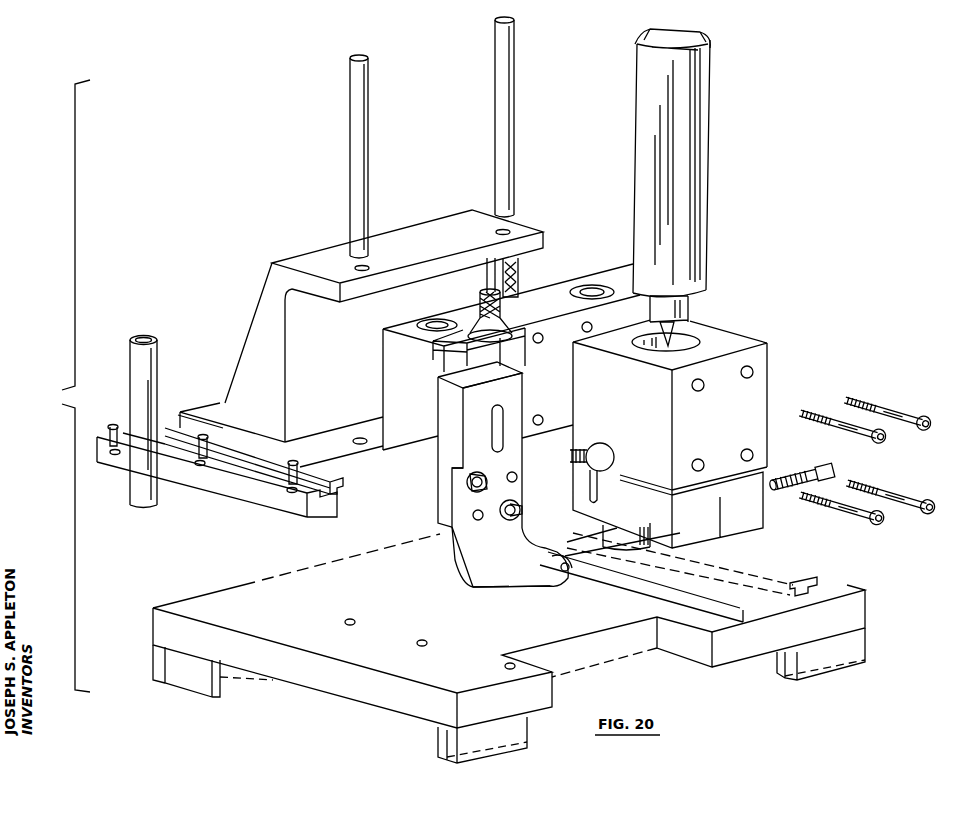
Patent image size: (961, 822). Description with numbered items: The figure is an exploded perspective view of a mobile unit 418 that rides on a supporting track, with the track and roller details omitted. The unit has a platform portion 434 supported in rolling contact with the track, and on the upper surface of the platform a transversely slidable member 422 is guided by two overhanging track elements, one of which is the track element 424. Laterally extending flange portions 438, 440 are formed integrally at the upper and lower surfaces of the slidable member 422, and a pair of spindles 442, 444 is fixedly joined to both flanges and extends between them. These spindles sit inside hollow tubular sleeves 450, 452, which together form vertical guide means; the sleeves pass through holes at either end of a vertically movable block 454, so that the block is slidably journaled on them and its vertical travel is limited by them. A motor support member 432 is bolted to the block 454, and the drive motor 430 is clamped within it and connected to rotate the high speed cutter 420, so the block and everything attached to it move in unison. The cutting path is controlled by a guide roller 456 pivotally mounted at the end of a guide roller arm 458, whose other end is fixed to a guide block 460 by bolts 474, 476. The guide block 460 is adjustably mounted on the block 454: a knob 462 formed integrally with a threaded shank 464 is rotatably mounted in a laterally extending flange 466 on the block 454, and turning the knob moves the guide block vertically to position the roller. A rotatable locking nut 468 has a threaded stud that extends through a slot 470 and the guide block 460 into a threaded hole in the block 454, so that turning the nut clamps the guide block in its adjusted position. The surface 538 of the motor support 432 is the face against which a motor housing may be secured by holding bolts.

The mobile unit 418 is at (57, 386).
The high speed cutter 420 is at (672, 334).
The transversely slidable member 422 is at (262, 350).
The overhanging track element 424 is at (230, 485).
The drive motor 430 is at (672, 192).
The motor support member 432 is at (670, 435).
The platform portion 434 is at (250, 603).
The laterally extending flange portion 438 is at (334, 258).
The laterally extending flange portion 440 is at (333, 447).
The spindle 442 is at (357, 159).
The spindle 444 is at (505, 65).
The hollow tubular sleeve 450 is at (149, 336).
The hollow tubular sleeve 452 is at (517, 262).
The vertically movable block 454 is at (542, 302).
The guide roller 456 is at (567, 578).
The guide roller arm 458 is at (498, 567).
The guide block 460 is at (447, 492).
The knob 462 is at (480, 297).
The threaded shank 464 is at (460, 386).
The laterally extending flange 466 is at (513, 357).
The rotatable locking nut 468 is at (601, 452).
The slot 470 is at (500, 423).
The bolt 474 is at (483, 485).
The bolt 476 is at (522, 508).
The surface of motor support 538 is at (768, 375).